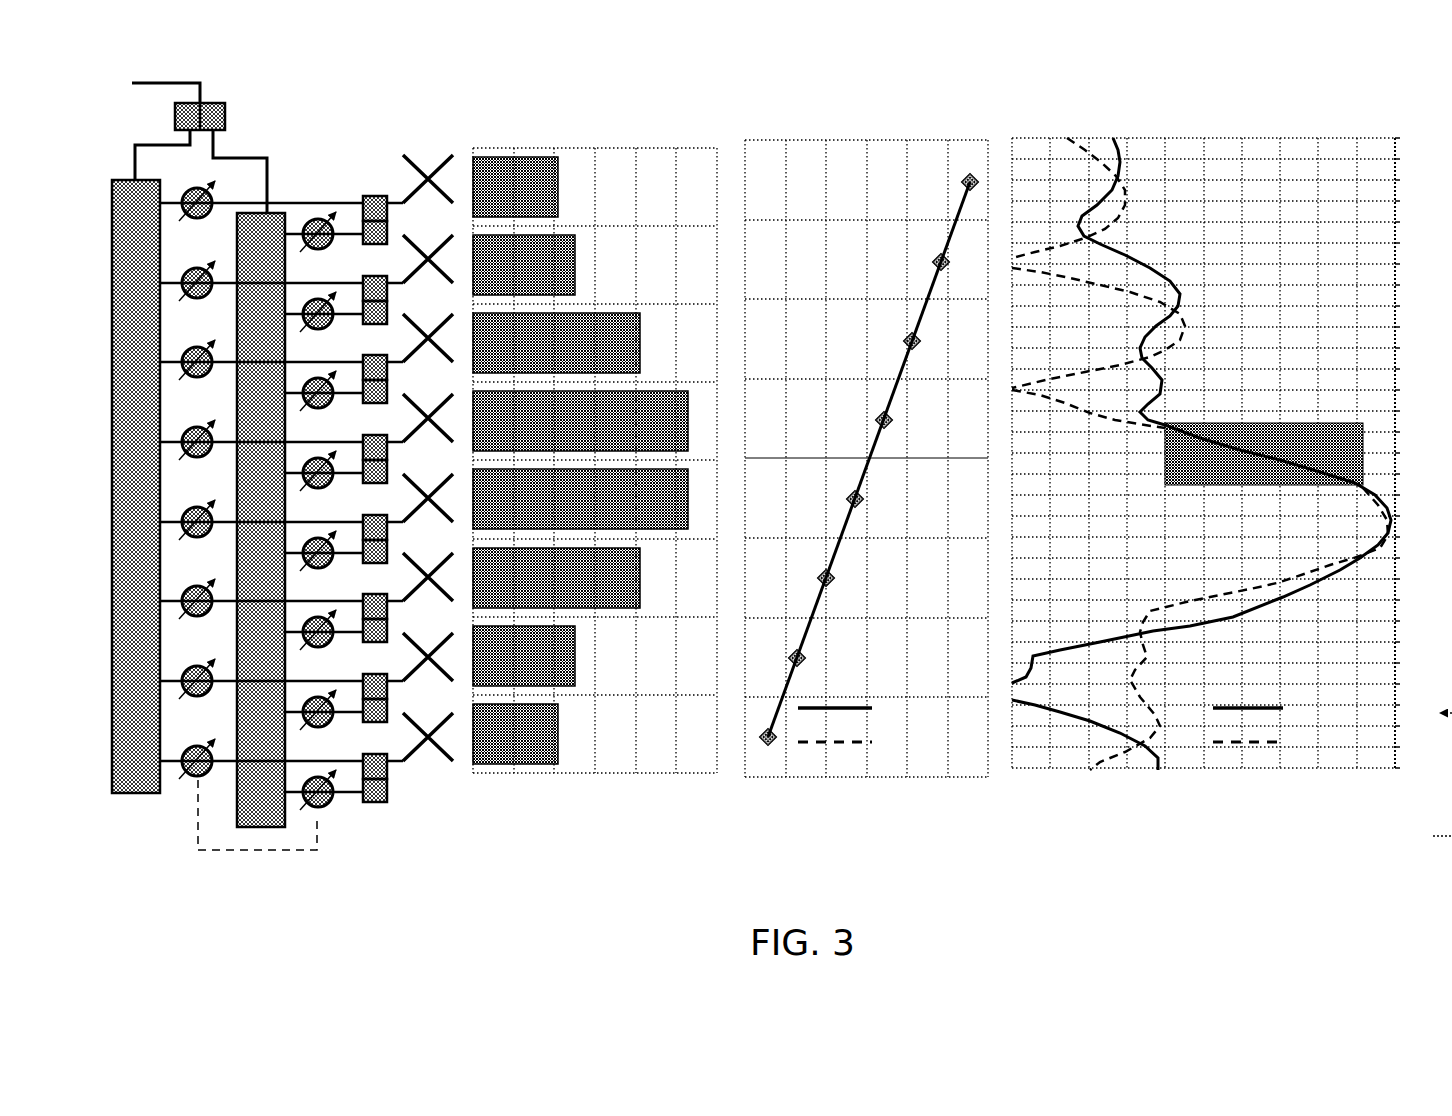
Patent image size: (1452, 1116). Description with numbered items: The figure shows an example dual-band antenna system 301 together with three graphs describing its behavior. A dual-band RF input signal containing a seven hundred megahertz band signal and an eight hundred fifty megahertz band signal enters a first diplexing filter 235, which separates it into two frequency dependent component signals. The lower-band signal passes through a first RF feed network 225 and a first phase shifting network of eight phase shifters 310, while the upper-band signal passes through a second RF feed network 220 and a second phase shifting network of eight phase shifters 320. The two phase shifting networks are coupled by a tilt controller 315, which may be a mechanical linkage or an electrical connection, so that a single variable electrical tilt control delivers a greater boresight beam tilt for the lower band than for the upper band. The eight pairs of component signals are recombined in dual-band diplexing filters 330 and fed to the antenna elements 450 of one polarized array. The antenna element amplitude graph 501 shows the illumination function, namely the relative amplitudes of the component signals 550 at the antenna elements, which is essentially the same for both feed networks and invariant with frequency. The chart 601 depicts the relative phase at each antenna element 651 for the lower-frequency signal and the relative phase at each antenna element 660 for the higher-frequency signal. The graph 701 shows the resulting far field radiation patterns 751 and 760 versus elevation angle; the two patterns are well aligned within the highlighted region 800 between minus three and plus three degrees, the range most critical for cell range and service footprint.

The second RF feed network 220 is at (273, 221).
The first RF feed network 225 is at (125, 186).
The first diplexing filter 235 is at (235, 102).
The antenna system 301 is at (262, 964).
The phase shifters 310 is at (178, 790).
The tilt controller 315 is at (257, 833).
The phase shifters 320 is at (331, 813).
The dual-band diplexing filters 330 is at (391, 797).
The antenna elements 450 is at (423, 150).
The antenna element amplitude graph 501 is at (627, 931).
The component signals 550 is at (563, 183).
The chart 601 is at (888, 895).
The relative phase at each antenna element 651 is at (948, 190).
The relative phase at each antenna element 660 is at (970, 168).
The graph 701 is at (1250, 889).
The far field radiation pattern 751 is at (1130, 150).
The far field radiation pattern 760 is at (1137, 196).
The region 800 is at (1315, 420).